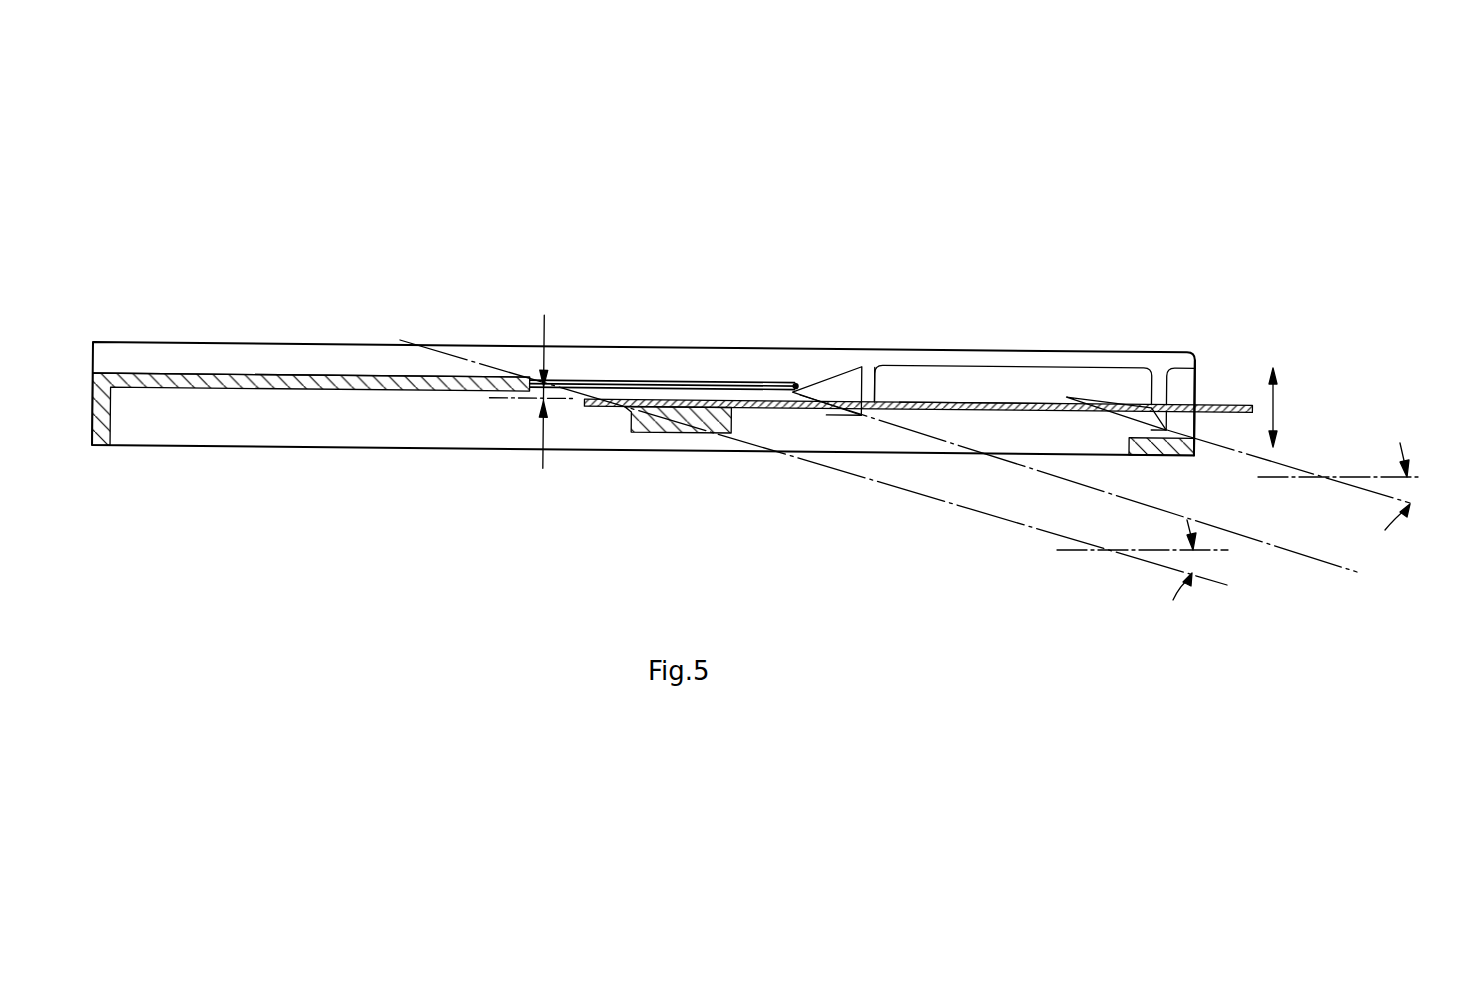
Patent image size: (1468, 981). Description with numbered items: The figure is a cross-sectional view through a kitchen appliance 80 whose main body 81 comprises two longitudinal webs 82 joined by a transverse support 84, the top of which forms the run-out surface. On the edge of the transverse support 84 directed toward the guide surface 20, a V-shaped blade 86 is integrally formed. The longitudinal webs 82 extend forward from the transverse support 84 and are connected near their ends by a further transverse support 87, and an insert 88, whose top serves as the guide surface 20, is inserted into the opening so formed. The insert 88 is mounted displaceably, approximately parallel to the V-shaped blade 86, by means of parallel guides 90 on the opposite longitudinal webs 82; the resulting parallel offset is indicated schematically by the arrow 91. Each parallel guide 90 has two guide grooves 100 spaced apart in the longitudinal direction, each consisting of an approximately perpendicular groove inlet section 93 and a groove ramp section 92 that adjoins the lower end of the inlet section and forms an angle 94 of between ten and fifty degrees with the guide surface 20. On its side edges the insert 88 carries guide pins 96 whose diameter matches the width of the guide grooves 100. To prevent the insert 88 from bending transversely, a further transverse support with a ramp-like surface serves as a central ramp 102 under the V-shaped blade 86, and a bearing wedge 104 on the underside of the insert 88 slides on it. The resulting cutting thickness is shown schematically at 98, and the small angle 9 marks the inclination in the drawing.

The kitchen appliance 80 is at (1190, 212).
The main body 81 is at (206, 320).
The longitudinal webs 82 is at (285, 358).
The transverse support 84 is at (187, 380).
The V-shaped blade 86 is at (745, 380).
The further transverse support 87 is at (1200, 440).
The insert 88 is at (1032, 392).
The parallel guides 90 is at (958, 345).
The arrow 91 is at (1290, 395).
The groove ramp section 92 is at (836, 420).
The groove inlet section 93 is at (873, 432).
The angle 94 is at (1195, 562).
The guide pin 96 is at (833, 398).
The cutting thickness 98 is at (535, 392).
The guide grooves 100 is at (875, 385).
The central ramp 102 is at (647, 435).
The bearing wedge 104 is at (738, 436).
The guide surface 20 is at (975, 397).
The tilt angle 9 is at (1400, 485).